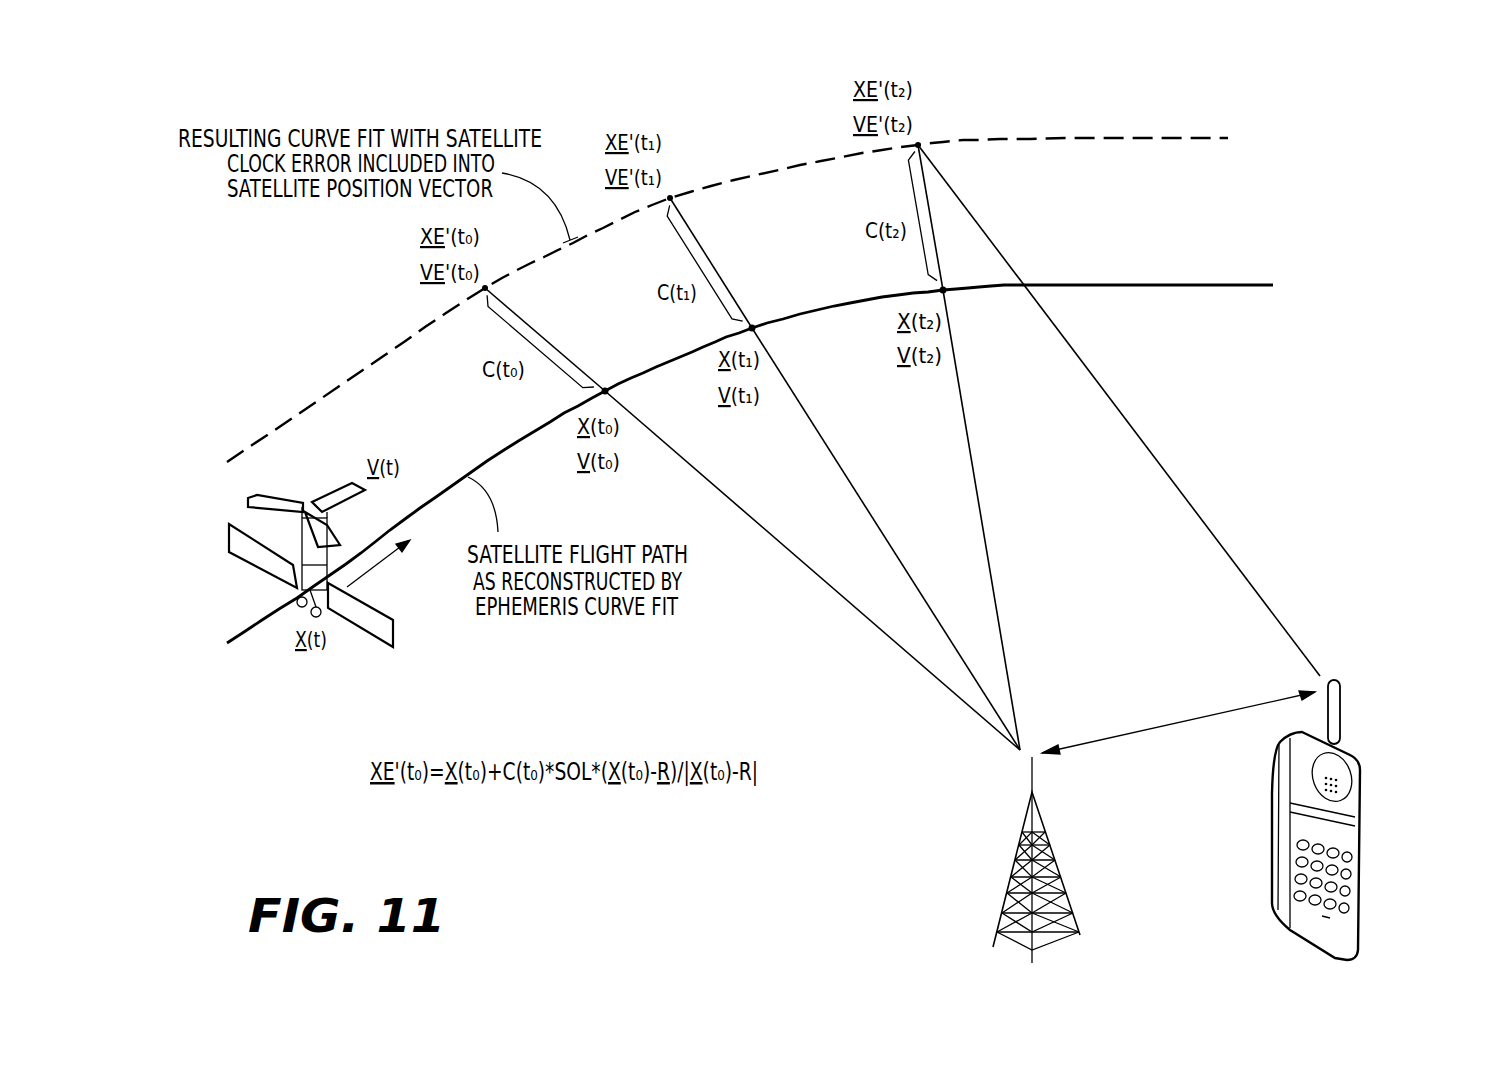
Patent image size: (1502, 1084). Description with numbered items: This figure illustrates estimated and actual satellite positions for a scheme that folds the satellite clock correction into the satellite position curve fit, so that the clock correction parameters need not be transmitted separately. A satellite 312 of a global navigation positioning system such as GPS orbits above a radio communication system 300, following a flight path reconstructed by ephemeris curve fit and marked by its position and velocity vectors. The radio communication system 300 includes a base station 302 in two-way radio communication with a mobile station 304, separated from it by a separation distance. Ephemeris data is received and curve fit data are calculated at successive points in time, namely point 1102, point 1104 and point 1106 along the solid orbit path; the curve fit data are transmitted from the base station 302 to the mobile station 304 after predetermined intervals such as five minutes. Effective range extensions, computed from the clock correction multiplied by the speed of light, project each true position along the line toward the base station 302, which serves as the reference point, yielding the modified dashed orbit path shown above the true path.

The radio communication system 300 is at (1175, 803).
The base station 302 is at (1013, 870).
The mobile station 304 is at (1352, 811).
The satellite 312 is at (242, 555).
The point 1102 is at (605, 391).
The point 1104 is at (752, 328).
The point 1106 is at (945, 292).